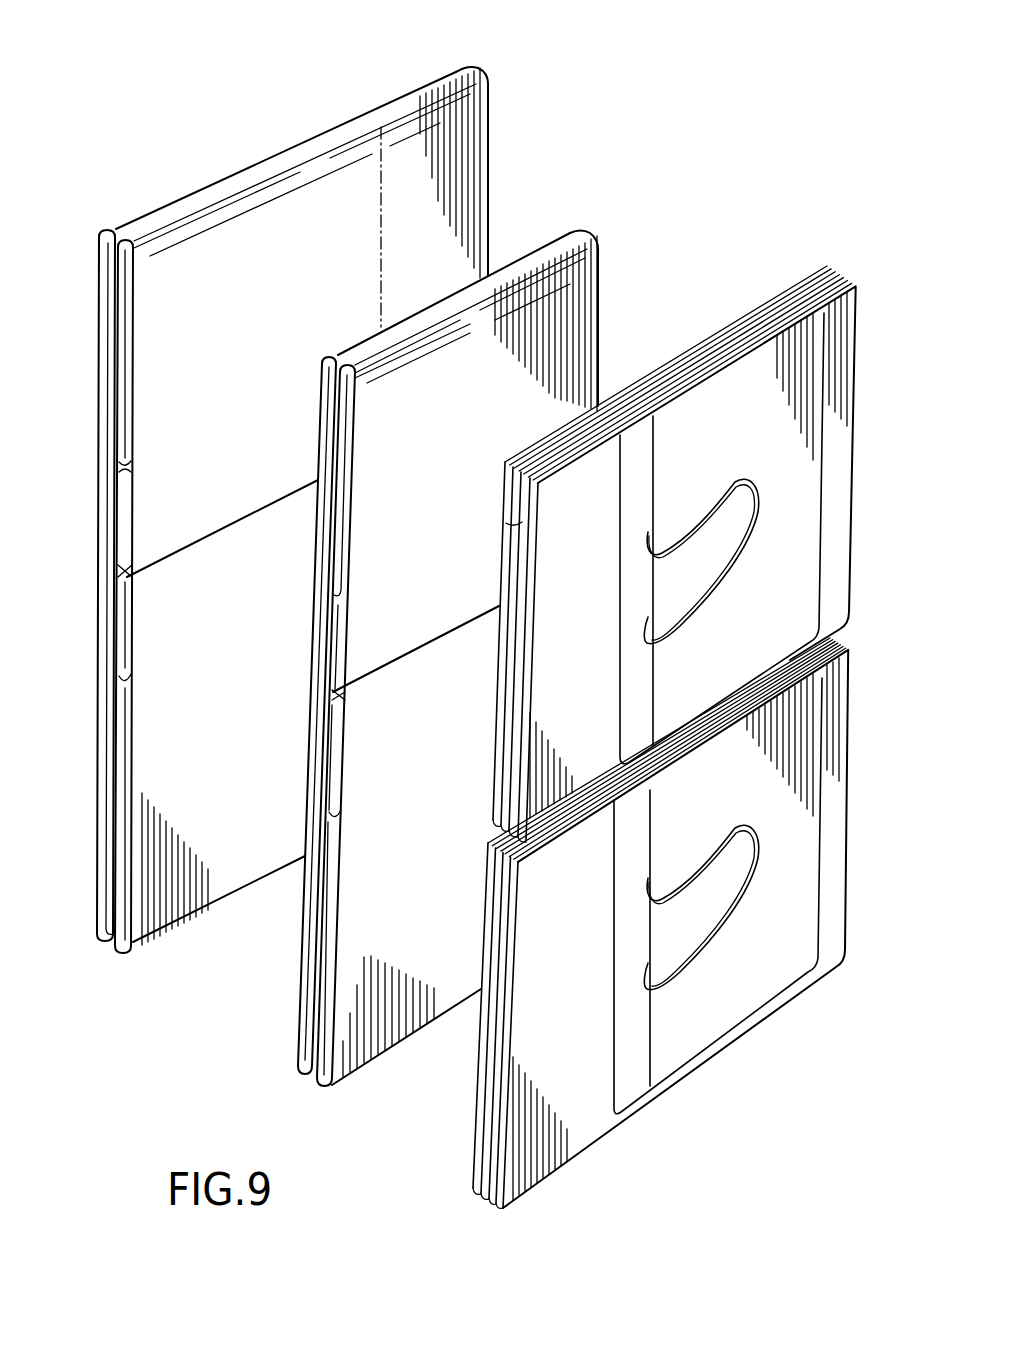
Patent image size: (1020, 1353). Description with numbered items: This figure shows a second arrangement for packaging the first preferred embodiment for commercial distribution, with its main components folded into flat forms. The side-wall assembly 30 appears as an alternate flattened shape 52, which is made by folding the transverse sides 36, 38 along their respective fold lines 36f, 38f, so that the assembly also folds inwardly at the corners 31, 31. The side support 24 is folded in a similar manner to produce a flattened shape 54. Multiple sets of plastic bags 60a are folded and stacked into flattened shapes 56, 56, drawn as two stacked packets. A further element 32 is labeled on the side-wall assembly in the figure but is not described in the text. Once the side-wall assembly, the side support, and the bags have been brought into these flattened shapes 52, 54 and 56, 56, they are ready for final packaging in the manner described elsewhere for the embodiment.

The side support 24 is at (398, 420).
The side-wall assembly 30 is at (318, 190).
The corners 31 is at (118, 228).
The hinge connector 32 is at (100, 545).
The transverse side 36 is at (113, 303).
The fold line 36f is at (108, 477).
The transverse side 38 is at (115, 772).
The fold line 38f is at (115, 676).
The flattened shape 52 is at (240, 115).
The flattened shape 54 is at (551, 200).
The flattened shapes 56 is at (773, 258).
The plastic bags 60a is at (527, 524).